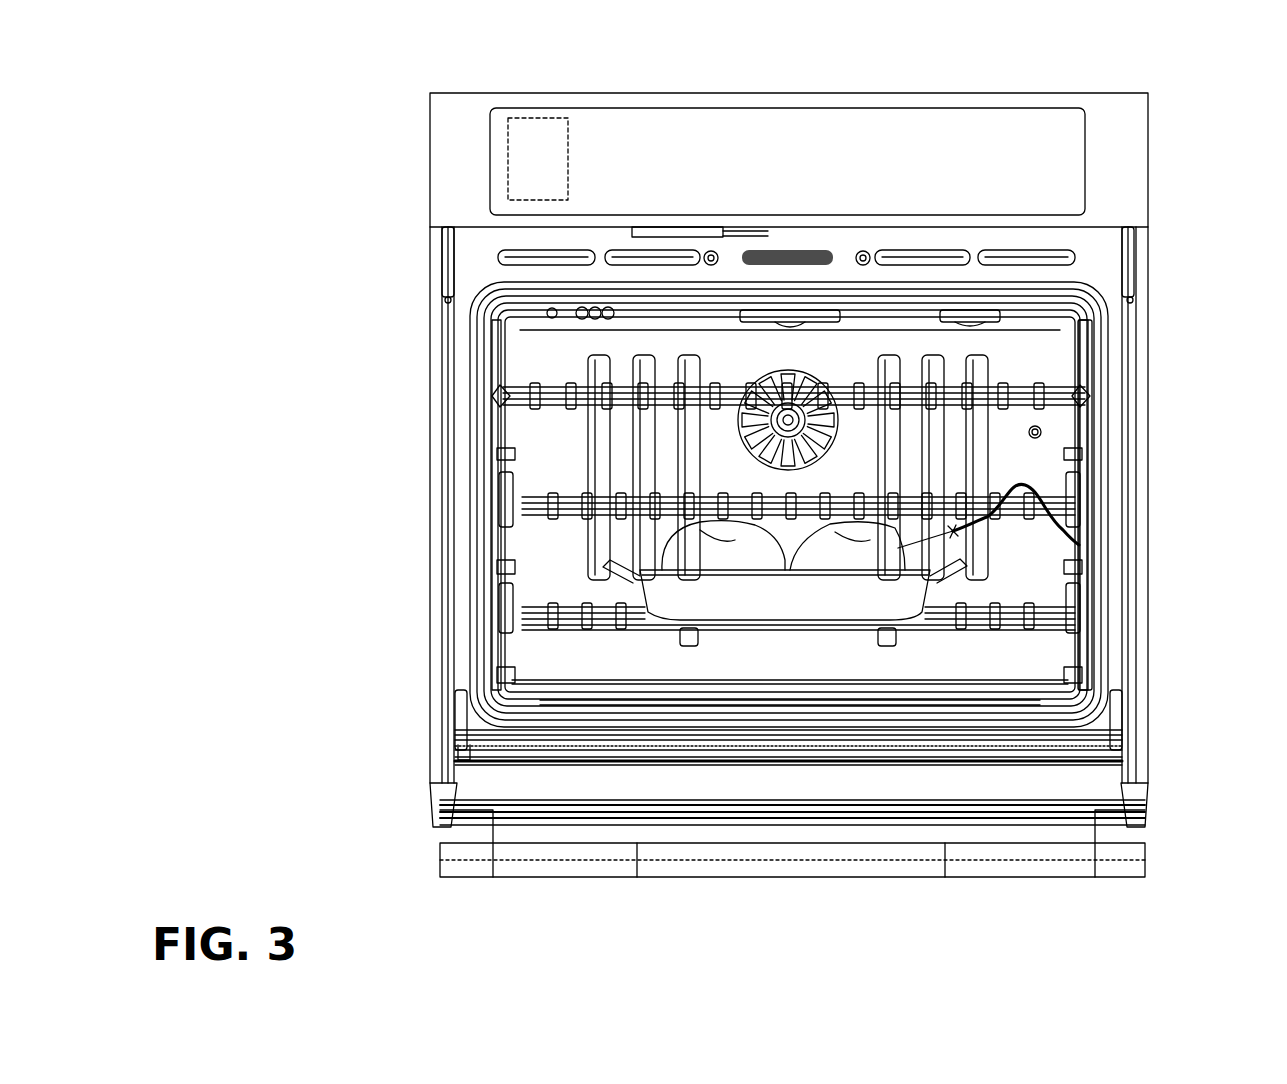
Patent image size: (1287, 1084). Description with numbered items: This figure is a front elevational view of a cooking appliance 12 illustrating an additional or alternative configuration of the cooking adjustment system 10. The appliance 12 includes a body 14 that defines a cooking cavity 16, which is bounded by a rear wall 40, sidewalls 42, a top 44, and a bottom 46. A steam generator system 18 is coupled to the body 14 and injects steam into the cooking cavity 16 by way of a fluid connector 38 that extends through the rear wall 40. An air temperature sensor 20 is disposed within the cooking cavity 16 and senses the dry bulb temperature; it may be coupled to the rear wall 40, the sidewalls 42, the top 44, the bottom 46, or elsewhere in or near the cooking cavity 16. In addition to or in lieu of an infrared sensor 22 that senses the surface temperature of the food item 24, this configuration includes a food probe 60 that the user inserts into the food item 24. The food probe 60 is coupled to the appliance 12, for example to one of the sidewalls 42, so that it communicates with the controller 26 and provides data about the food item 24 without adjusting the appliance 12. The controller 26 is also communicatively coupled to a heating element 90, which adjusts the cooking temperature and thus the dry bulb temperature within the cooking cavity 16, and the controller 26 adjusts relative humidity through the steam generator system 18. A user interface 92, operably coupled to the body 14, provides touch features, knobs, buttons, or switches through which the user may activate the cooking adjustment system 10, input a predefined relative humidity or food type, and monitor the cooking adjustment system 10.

The cooking adjustment system 10 is at (1114, 299).
The appliance 12 is at (1170, 107).
The body 14 is at (1115, 172).
The cooking cavity 16 is at (545, 650).
The steam generator system 18 is at (1050, 413).
The air temperature sensor 20 is at (968, 308).
The infrared sensor 22 is at (600, 308).
The food item 24 is at (688, 537).
The controller 26 is at (540, 108).
The fluid connector 38 is at (1042, 432).
The rear wall 40 is at (1028, 590).
The sidewalls 42 is at (500, 548).
The top 44 is at (532, 292).
The bottom 46 is at (515, 690).
The food probe 60 is at (1022, 477).
The heating element 90 is at (808, 310).
The user interface 92 is at (703, 170).